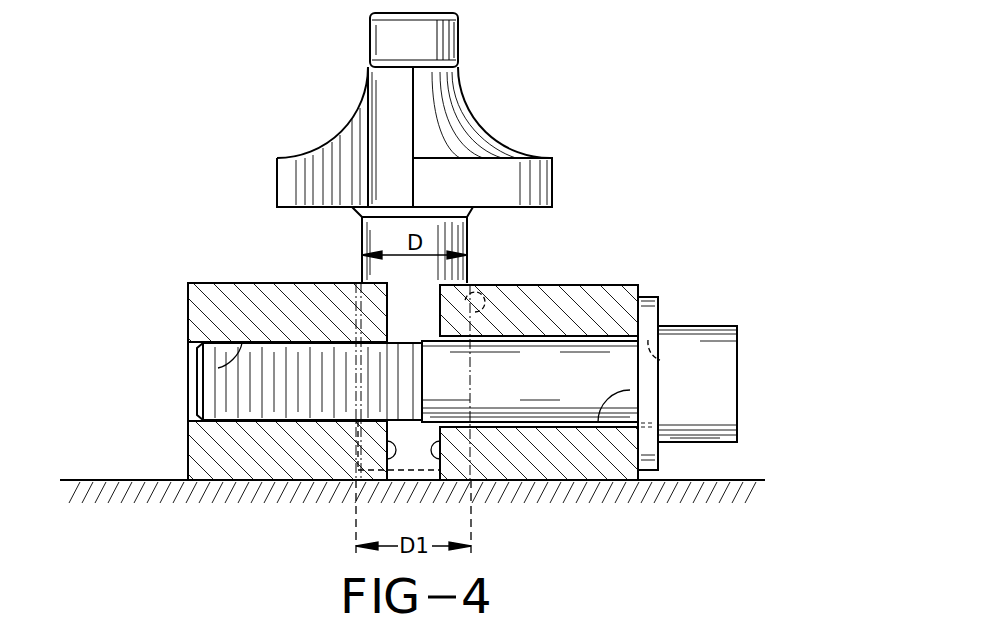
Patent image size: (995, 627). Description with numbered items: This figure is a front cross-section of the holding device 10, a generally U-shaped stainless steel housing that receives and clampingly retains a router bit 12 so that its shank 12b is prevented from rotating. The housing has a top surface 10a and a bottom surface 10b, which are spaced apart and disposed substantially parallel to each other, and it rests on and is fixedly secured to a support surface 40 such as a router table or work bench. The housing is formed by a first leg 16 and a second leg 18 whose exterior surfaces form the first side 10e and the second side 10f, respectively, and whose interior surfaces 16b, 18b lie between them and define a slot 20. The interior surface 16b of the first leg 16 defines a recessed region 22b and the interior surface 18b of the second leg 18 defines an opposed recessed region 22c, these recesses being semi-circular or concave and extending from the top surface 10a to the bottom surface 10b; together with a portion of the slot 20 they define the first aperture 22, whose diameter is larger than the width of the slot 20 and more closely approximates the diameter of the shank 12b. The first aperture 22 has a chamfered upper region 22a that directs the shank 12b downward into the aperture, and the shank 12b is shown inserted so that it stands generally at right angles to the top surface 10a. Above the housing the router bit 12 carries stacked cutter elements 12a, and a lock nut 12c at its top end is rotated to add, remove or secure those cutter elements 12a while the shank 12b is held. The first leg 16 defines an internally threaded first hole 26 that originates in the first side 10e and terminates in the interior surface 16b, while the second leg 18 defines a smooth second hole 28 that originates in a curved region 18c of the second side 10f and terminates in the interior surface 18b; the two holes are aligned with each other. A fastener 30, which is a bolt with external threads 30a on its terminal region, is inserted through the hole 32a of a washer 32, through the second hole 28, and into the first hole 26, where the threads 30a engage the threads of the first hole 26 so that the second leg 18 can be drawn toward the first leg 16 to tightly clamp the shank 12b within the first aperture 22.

The holding device 10 is at (416, 370).
The top surface 10a is at (245, 283).
The bottom surface 10b is at (208, 480).
The first side 10e is at (188, 325).
The second side 10f is at (658, 458).
The router bit 12 is at (391, 148).
The cutter elements 12a is at (323, 145).
The shank 12b is at (362, 235).
The lock nut 12c is at (370, 47).
The first leg 16 is at (227, 281).
The interior surface of first leg 16b is at (386, 451).
The second leg 18 is at (597, 275).
The interior surface of second leg 18b is at (442, 460).
The curved region 18c is at (640, 316).
The slot 20 is at (433, 328).
The first aperture 22 is at (373, 365).
The chamfered upper region 22a is at (353, 292).
The recessed region 22b is at (314, 381).
The recessed region 22c is at (485, 308).
The first hole 26 is at (218, 368).
The second hole 28 is at (630, 390).
The fastener 30 is at (464, 384).
The external threads 30a is at (220, 400).
The washer 32 is at (718, 356).
The hole of washer 32a is at (660, 345).
The support surface 40 is at (100, 480).